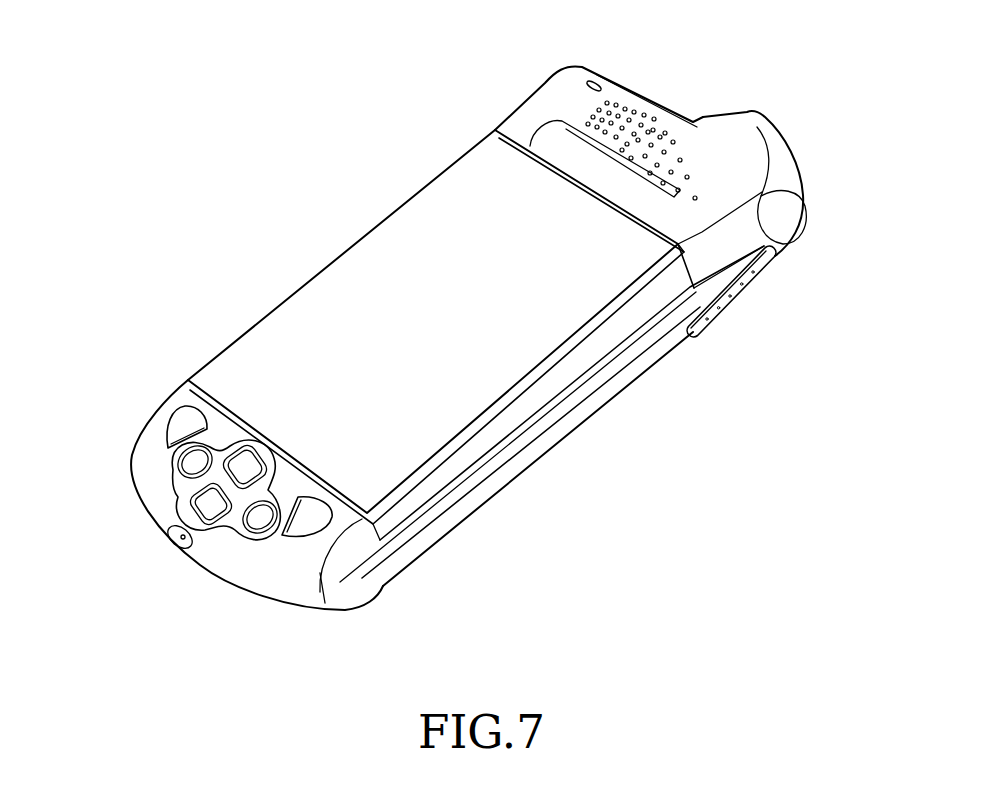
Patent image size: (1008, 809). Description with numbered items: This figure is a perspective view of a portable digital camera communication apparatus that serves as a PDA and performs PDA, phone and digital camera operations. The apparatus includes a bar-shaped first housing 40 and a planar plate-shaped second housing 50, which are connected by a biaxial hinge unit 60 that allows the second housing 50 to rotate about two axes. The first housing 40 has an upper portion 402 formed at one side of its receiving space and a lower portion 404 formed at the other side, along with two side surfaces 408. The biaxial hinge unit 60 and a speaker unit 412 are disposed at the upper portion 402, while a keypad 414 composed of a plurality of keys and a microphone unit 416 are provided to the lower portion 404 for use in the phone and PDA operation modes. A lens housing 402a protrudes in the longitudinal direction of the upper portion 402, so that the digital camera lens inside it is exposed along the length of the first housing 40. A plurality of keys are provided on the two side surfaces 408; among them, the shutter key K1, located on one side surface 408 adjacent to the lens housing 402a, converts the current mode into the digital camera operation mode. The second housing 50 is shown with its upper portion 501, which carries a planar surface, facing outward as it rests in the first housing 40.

The first housing 40 is at (432, 308).
The second housing 50 is at (425, 327).
The biaxial hinge unit 60 is at (570, 145).
The upper portion 402 is at (642, 177).
The lens housing 402a is at (754, 132).
The lower portion 404 is at (213, 488).
The side surface 408 is at (583, 407).
The speaker unit 412 is at (647, 118).
The keypad 414 is at (183, 422).
The microphone unit 416 is at (172, 546).
The upper portion 501 is at (362, 254).
The shutter key K1 is at (737, 283).